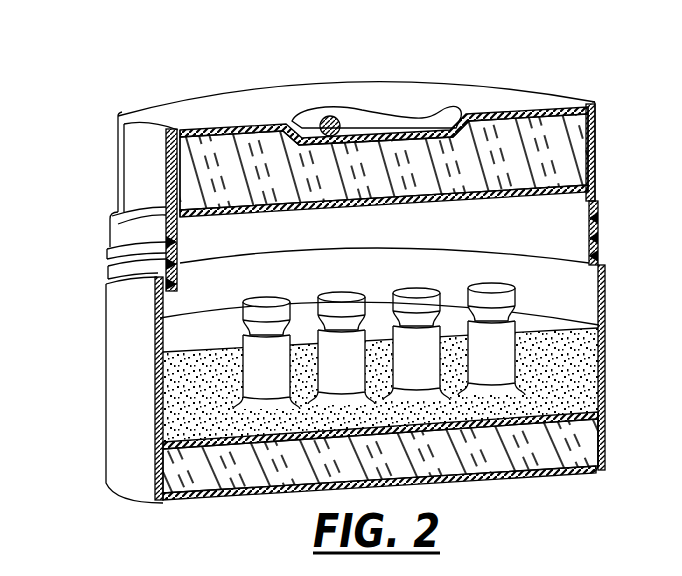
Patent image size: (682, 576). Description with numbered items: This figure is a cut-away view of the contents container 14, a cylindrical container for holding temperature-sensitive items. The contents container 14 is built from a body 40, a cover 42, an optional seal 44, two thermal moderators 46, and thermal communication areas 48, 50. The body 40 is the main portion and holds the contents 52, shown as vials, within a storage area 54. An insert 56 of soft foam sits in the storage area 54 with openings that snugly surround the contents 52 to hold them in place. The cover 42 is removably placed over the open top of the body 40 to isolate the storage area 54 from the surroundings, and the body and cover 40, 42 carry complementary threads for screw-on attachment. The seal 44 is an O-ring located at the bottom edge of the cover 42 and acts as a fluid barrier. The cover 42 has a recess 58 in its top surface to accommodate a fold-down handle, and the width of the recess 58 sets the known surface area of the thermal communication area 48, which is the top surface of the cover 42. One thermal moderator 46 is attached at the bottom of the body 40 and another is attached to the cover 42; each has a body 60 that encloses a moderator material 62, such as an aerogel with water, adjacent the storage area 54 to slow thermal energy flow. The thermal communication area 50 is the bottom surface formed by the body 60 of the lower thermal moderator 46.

The contents container 14 is at (360, 298).
The body 40 is at (123, 427).
The cover 42 is at (137, 167).
The seal 44 is at (155, 283).
The thermal moderator 46 is at (580, 108).
The thermal communication area 48 is at (215, 106).
The thermal communication area 50 is at (235, 497).
The contents 52 is at (505, 337).
The storage area 54 is at (556, 250).
The insert 56 is at (585, 360).
The recess 58 is at (447, 118).
The body 60 is at (600, 208).
The moderator material 62 is at (540, 130).